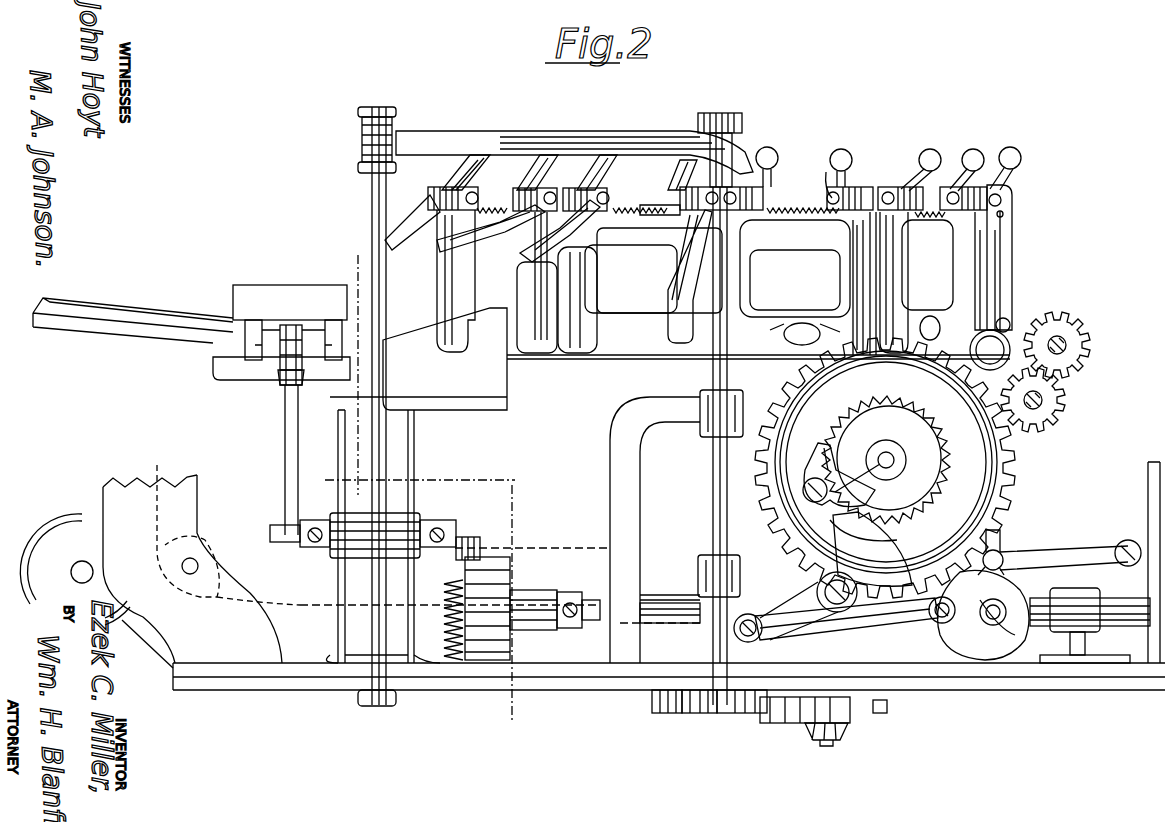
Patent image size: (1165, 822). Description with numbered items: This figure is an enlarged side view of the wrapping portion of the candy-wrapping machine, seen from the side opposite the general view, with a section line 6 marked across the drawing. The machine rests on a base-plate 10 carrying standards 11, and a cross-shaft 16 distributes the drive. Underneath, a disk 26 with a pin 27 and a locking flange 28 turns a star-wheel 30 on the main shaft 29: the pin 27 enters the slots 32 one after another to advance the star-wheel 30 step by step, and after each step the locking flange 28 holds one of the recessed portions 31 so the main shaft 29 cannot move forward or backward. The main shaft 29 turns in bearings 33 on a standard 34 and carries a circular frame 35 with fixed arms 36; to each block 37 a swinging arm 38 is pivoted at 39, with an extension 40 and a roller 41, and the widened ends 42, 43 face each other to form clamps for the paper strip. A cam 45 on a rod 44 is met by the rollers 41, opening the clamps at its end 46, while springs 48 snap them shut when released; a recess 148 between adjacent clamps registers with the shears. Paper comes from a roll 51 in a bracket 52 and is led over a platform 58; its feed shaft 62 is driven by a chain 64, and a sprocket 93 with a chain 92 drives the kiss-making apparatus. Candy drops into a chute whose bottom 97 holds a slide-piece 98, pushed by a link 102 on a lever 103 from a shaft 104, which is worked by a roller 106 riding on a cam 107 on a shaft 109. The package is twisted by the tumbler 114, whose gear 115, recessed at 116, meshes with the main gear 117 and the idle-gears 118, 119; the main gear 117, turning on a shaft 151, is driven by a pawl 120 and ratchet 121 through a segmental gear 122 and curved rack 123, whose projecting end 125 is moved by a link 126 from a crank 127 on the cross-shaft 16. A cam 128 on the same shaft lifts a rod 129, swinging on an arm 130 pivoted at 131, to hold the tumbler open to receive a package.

The center line 6 is at (421, 484).
The base-plate 10 is at (421, 688).
The standards 11 is at (1098, 632).
The cross-shaft 16 is at (1000, 606).
The disk 26 is at (862, 730).
The pin 27 is at (888, 708).
The locking flange 28 is at (800, 715).
The main shaft 29 is at (722, 495).
The star-wheel 30 is at (740, 706).
The recessed portions 31 is at (703, 705).
The slots 32 is at (678, 705).
The bearings 33 is at (740, 400).
The standard 34 is at (617, 493).
The frame 35 is at (653, 238).
The fixed arms 36 is at (582, 277).
The block 37 is at (873, 200).
The swinging arm 38 is at (490, 240).
The pivot 39 is at (831, 190).
The extension 40 is at (530, 187).
The roller 41 is at (778, 161).
The widened end of fixed arm 42 is at (582, 343).
The widened end of swinging arm 43 is at (457, 252).
The rod 44 is at (387, 444).
The cam 45 is at (437, 141).
The end of cam 46 is at (750, 152).
The springs 48 is at (648, 204).
The roll 51 is at (66, 517).
The bracket 52 is at (148, 644).
The platform 58 is at (125, 328).
The shaft 62 is at (198, 570).
The chain 64 is at (566, 548).
The chain 92 is at (195, 463).
The sprocket 93 is at (220, 553).
The bottom 97 is at (262, 293).
The slide-piece 98 is at (263, 327).
The link 102 is at (290, 350).
The lever 103 is at (288, 432).
The shaft 104 is at (457, 535).
The roller 106 is at (482, 548).
The cam 107 is at (505, 575).
The shaft 109 is at (683, 622).
The tumbler 114 is at (1010, 326).
The gear 115 is at (1002, 338).
The recess 116 is at (1005, 330).
The main gear 117 is at (779, 520).
The idle-gear 118 is at (1066, 406).
The idle-gear 119 is at (1088, 352).
The pawl 120 is at (822, 452).
The ratchet 121 is at (871, 418).
The segmental gear 122 is at (912, 442).
The curved rack 123 is at (898, 539).
The projecting end 125 is at (757, 638).
The link 126 is at (856, 624).
The crank 127 is at (933, 622).
The cam 128 is at (1013, 637).
The rod 129 is at (1000, 551).
The arm 130 is at (1076, 551).
The pivot 131 is at (1128, 541).
The recess 148 is at (558, 261).
The shaft 151 is at (878, 455).